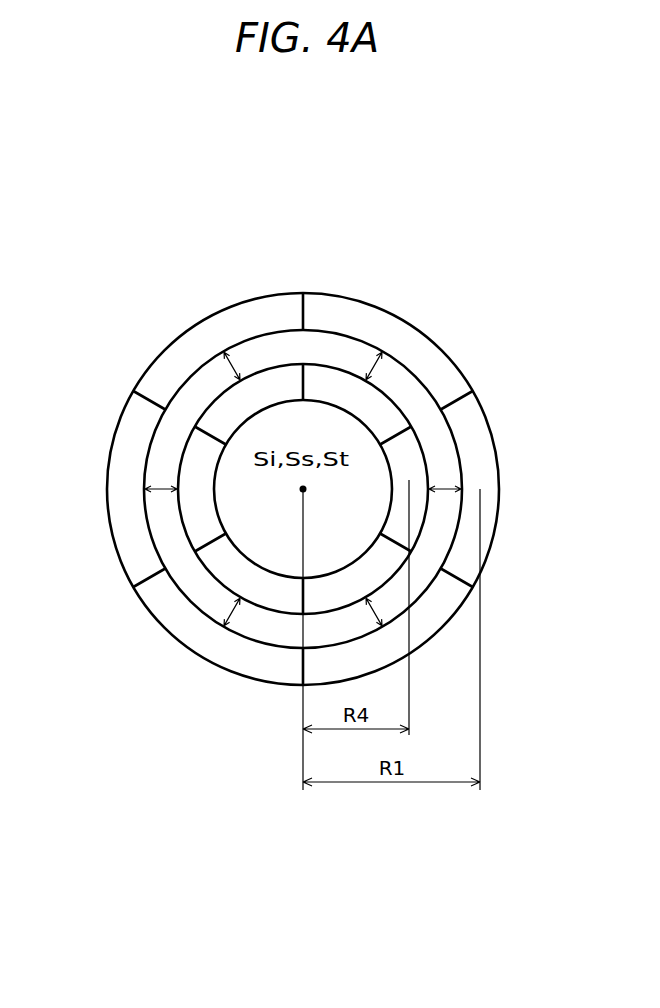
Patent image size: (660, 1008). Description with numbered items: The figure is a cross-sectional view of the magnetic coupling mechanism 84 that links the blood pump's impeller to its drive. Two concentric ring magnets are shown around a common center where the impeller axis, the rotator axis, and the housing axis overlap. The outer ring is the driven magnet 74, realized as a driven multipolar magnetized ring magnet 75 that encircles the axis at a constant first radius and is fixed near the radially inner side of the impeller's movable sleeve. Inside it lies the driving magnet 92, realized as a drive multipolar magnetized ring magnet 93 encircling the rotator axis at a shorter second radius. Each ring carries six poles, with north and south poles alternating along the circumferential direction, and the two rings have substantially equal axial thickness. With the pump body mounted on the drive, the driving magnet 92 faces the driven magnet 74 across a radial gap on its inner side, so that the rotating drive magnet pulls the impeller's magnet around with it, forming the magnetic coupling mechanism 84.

The driven magnet 74 is at (303, 464).
The driven multipolar magnetized ring magnet 75 is at (316, 294).
The driving magnet 92 is at (239, 478).
The drive multipolar magnetized ring magnet 93 is at (212, 403).
The magnetic coupling mechanism 84 is at (380, 364).